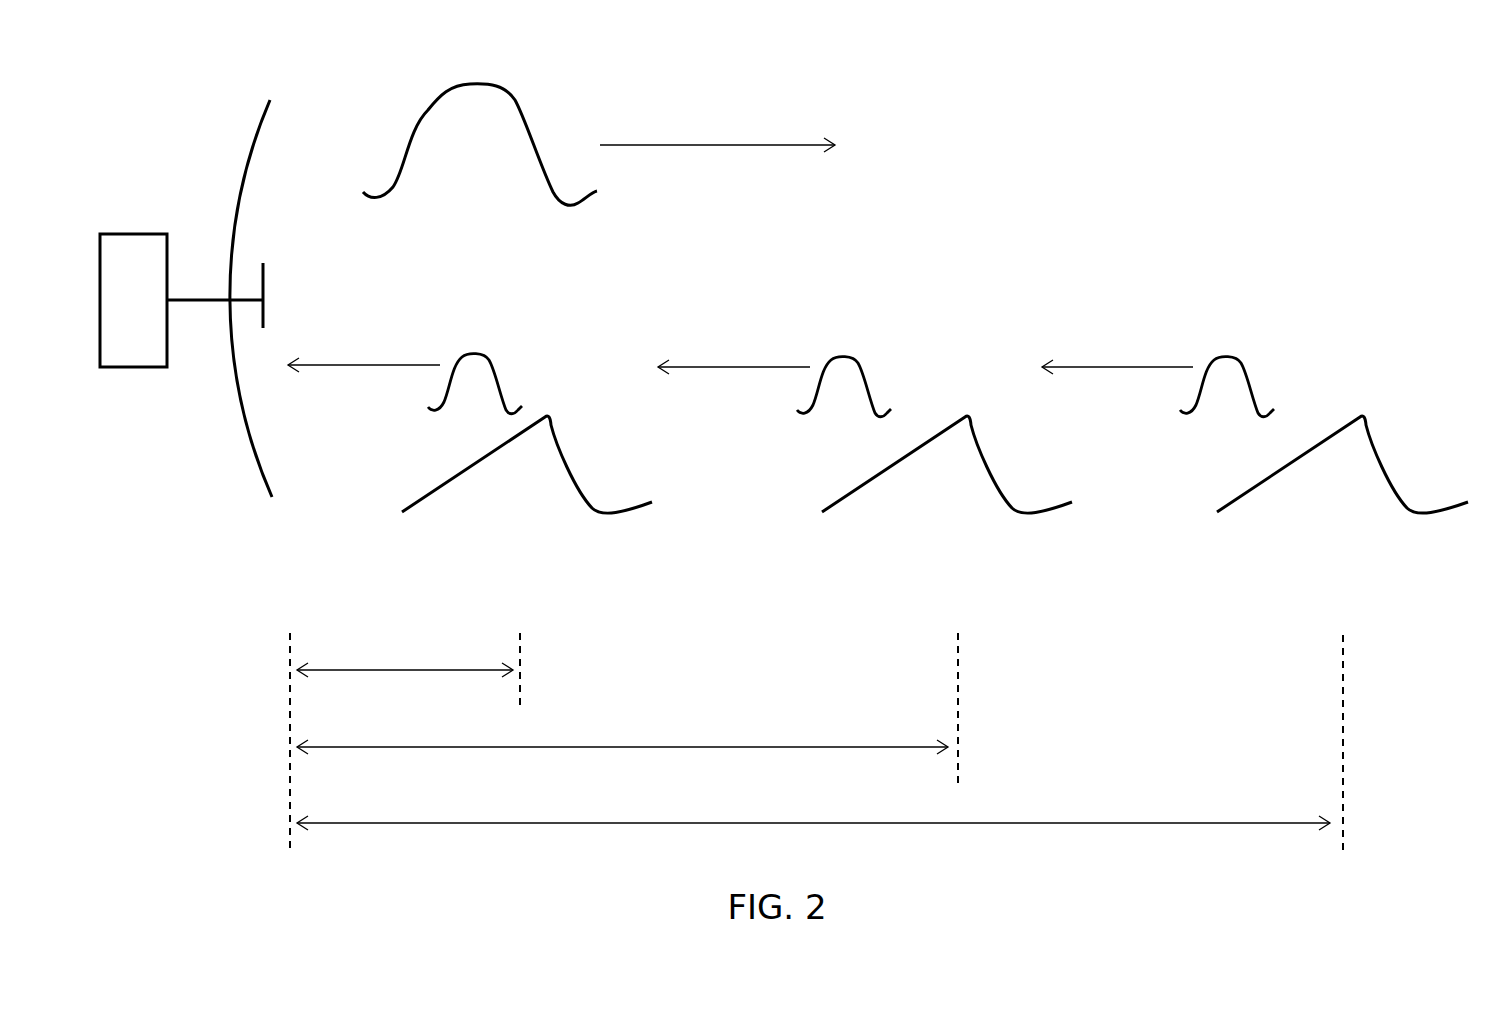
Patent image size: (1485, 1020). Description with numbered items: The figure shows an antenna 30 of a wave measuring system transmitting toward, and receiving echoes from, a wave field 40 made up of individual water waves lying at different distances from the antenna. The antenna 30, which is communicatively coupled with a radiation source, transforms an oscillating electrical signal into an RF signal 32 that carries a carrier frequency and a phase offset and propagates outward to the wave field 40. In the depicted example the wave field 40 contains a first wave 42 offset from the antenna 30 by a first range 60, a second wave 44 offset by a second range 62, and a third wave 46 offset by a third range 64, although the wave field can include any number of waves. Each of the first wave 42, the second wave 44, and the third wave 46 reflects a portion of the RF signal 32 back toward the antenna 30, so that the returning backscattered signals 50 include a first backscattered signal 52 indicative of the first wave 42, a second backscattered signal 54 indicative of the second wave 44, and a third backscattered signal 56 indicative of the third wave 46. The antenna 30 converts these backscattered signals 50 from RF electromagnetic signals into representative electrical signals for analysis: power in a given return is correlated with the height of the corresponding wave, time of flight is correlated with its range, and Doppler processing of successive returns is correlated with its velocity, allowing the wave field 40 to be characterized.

The antenna 30 is at (135, 381).
The RF signal 32 is at (475, 83).
The wave field 40 is at (858, 474).
The first wave 42 is at (549, 416).
The second wave 44 is at (969, 414).
The third wave 46 is at (1363, 413).
The backscattered signals 50 is at (781, 345).
The first backscattered signal 52 is at (485, 353).
The second backscattered signal 54 is at (853, 357).
The third backscattered signal 56 is at (1228, 356).
The first range 60 is at (405, 668).
The second range 62 is at (685, 745).
The third range 64 is at (1042, 823).